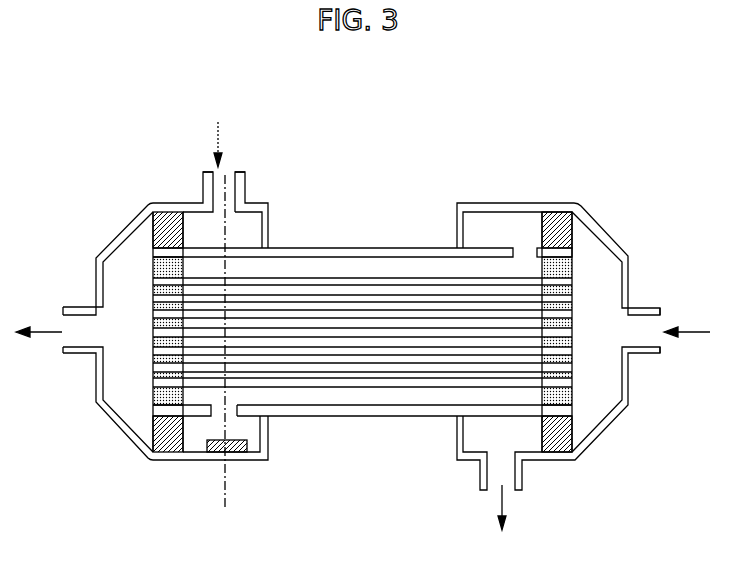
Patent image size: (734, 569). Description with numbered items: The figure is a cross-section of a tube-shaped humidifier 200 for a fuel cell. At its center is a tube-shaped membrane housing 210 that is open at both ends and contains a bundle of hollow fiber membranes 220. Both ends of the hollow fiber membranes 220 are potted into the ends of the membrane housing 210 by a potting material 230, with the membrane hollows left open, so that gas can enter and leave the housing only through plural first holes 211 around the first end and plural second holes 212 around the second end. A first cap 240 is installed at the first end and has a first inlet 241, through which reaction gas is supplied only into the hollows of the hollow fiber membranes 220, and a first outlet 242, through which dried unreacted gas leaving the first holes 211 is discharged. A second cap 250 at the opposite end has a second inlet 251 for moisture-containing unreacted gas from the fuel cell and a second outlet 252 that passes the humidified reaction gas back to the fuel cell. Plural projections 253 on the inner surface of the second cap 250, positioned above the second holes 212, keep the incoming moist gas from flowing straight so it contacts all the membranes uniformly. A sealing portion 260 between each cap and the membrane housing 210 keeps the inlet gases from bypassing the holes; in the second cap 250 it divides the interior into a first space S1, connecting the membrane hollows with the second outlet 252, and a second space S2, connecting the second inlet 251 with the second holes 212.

The tube-shaped humidifier 200 is at (446, 112).
The membrane housing 210 is at (335, 247).
The first holes 211 is at (527, 250).
The second holes 212 is at (230, 410).
The hollow fiber membranes 220 is at (365, 388).
The potting material 230 is at (160, 397).
The first cap 240 is at (490, 205).
The first inlet 241 is at (657, 322).
The first outlet 242 is at (507, 487).
The second cap 250 is at (120, 232).
The second inlet 251 is at (237, 172).
The second outlet 252 is at (62, 302).
The projections 253 is at (208, 458).
The sealing portion 260 is at (153, 443).
The first space S1 is at (117, 273).
The second space S2 is at (262, 228).